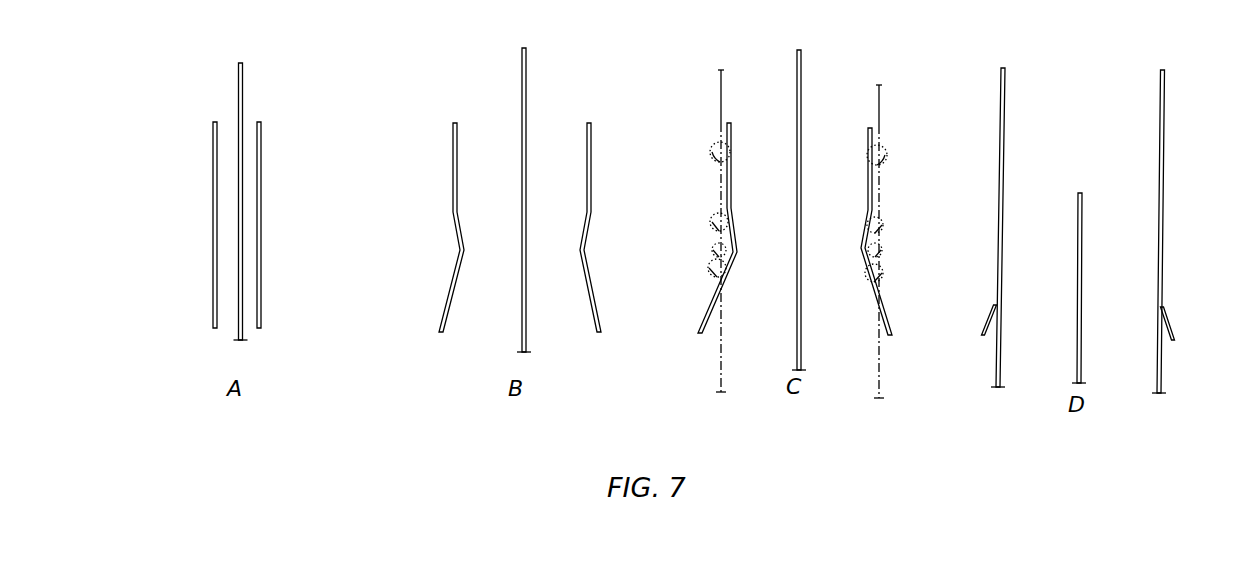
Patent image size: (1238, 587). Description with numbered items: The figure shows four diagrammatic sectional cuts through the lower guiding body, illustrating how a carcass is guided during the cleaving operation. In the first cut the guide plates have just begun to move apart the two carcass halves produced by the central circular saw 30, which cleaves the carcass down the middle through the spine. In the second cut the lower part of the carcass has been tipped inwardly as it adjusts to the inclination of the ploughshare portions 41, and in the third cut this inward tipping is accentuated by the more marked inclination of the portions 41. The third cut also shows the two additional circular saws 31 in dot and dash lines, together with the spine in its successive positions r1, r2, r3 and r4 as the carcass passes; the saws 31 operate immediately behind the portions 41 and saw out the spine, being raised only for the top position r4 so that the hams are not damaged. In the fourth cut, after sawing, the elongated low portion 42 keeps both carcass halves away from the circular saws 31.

In FIG. 7A, the circular saw 30 is at (238, 84).
In FIG. 7B, the circular saw 30 is at (522, 88).
In FIG. 7C, the circular saw 30 is at (801, 97).
In FIG. 7D, the circular saw 30 is at (1082, 215).
In FIG. 7C, the additional circular saws 31 is at (721, 97).
In FIG. 7D, the additional circular saws 31 is at (1001, 125).
In FIG. 7A, the rectangular portion 41 is at (213, 201).
In FIG. 7B, the rectangular portion 41 is at (453, 206).
In FIG. 7C, the rectangular portion 41 is at (727, 194).
In FIG. 7D, the elongated low portion 42 is at (986, 320).
In FIG. 7C, the spine position r1 is at (882, 251).
In FIG. 7C, the spine position r2 is at (879, 281).
In FIG. 7C, the spine position r3 is at (883, 228).
In FIG. 7C, the spine position r4 is at (886, 160).